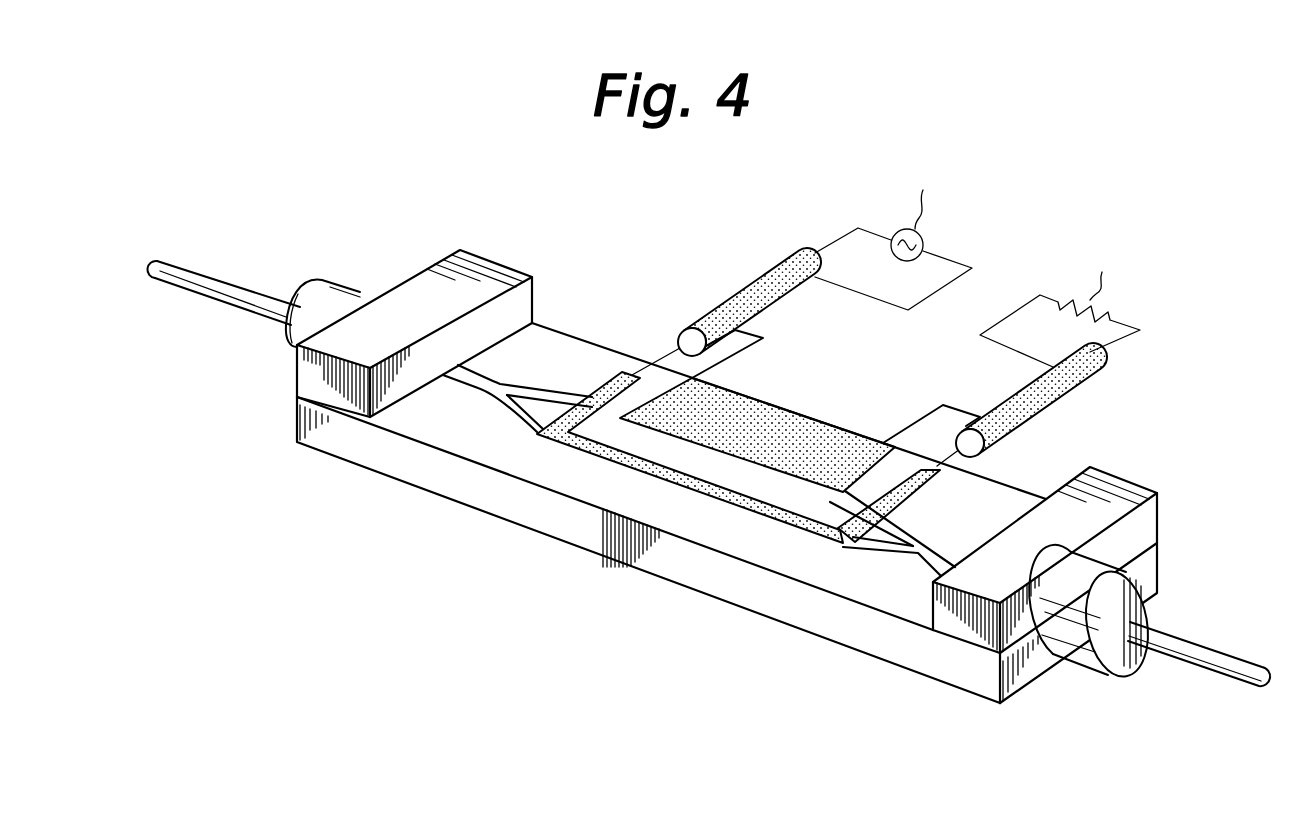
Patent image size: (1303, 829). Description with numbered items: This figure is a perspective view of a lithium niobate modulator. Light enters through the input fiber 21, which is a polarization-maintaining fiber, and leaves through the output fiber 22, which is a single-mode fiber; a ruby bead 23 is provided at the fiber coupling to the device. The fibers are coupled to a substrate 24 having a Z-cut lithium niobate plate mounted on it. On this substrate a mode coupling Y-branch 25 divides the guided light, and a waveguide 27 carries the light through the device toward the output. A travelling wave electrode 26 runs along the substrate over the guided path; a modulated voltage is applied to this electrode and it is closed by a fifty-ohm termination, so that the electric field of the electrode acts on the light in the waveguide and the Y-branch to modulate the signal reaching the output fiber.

The input fiber 21 is at (187, 297).
The output fiber 22 is at (1196, 635).
The ruby bead 23 is at (1078, 656).
The substrate 24 is at (602, 530).
The mode coupling Y-branch 25 is at (497, 403).
The travelling wave electrode 26 is at (628, 363).
The waveguide 27 is at (871, 548).